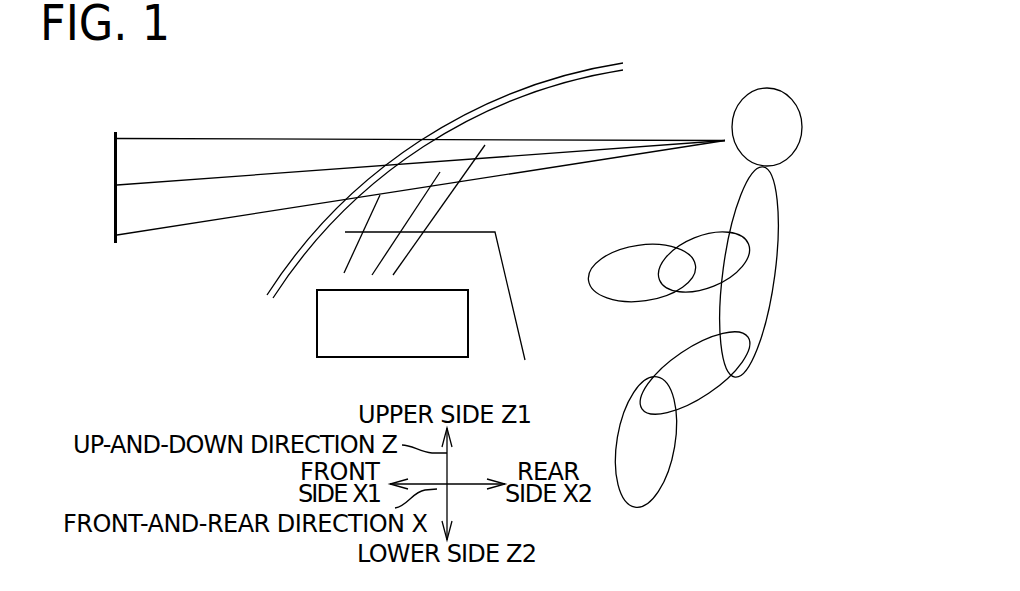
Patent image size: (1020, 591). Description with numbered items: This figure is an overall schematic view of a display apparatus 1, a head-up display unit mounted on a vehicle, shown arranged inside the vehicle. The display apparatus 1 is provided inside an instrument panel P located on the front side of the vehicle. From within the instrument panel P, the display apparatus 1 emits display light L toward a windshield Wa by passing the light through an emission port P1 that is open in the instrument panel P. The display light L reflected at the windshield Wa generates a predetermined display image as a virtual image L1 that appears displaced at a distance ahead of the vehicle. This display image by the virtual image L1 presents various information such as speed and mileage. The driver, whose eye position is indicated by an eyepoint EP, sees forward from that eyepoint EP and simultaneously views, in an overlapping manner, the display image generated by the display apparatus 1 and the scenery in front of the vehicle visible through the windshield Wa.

The display apparatus 1 is at (304, 337).
The virtual image L1 is at (114, 165).
The display light L is at (602, 139).
The windshield Wa is at (598, 63).
The eyepoint EP is at (725, 140).
The emission port P1 is at (427, 231).
The instrument panel P is at (500, 248).